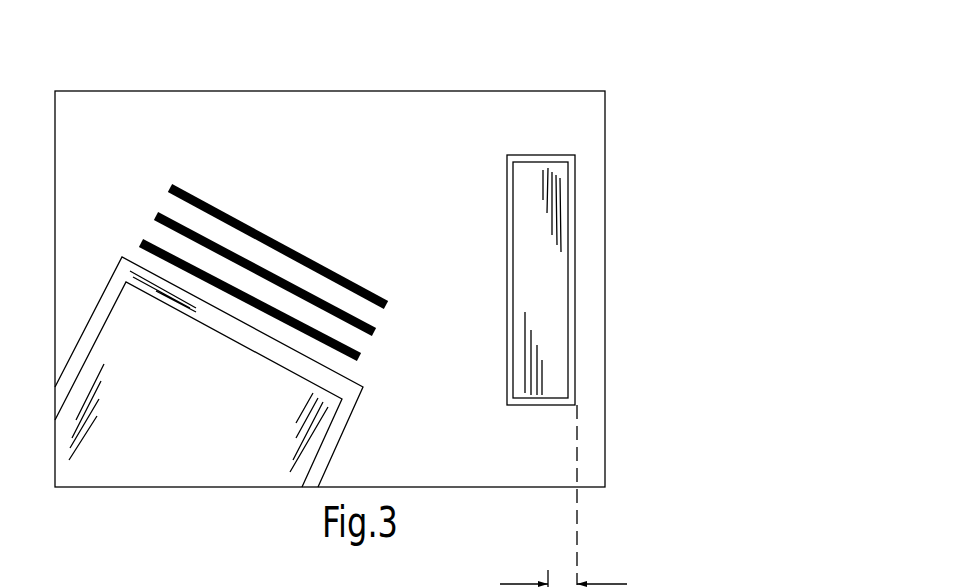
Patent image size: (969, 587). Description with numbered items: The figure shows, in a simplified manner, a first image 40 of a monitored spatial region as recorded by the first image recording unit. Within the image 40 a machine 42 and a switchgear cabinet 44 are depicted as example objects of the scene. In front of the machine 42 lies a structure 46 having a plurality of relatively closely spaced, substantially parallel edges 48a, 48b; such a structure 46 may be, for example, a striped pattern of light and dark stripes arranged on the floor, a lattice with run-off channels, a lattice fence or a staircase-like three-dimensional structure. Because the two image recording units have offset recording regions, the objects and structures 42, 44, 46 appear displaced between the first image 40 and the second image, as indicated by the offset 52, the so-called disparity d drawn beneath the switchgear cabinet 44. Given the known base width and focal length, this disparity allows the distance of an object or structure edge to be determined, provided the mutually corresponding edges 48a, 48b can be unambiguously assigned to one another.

The first image 40 is at (482, 75).
The machine 42 is at (203, 453).
The switchgear cabinet 44 is at (557, 293).
The structure 46 is at (304, 191).
The parallel edge 48a is at (262, 232).
The parallel edge 48b is at (297, 286).
The offset 52 is at (590, 559).